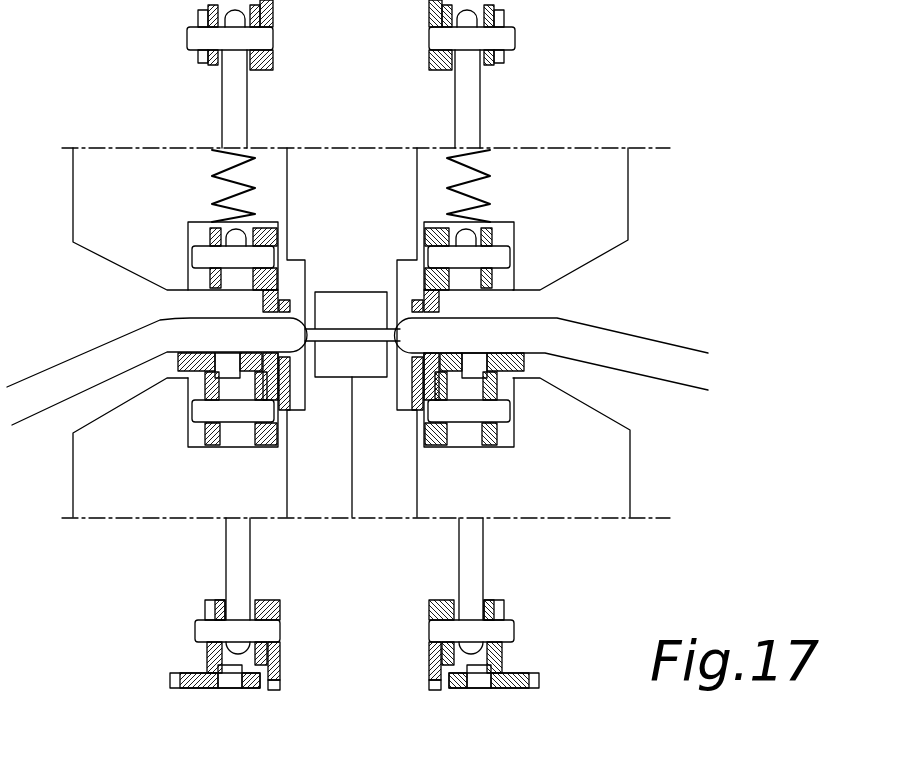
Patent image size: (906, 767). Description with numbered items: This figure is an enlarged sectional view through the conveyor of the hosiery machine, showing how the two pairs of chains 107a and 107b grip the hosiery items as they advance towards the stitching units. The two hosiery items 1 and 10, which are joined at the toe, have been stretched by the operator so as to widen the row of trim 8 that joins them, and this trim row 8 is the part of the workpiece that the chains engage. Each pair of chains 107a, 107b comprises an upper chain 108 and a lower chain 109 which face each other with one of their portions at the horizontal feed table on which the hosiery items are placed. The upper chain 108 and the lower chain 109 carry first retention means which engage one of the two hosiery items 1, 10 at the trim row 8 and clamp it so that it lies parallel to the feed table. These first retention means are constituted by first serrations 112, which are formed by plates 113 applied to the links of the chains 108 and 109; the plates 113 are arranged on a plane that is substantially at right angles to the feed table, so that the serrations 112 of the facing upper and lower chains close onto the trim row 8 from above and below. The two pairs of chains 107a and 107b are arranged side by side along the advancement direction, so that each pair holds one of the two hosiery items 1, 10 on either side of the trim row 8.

The hosiery item 1 is at (55, 380).
The hosiery item 10 is at (630, 345).
The row of trim 8 is at (326, 333).
The pair of chains 107a is at (180, 408).
The pair of chains 107b is at (545, 248).
The upper chain 108 is at (200, 32).
The lower chain 109 is at (232, 410).
The first serrations 112 is at (283, 310).
The plates 113 is at (418, 232).